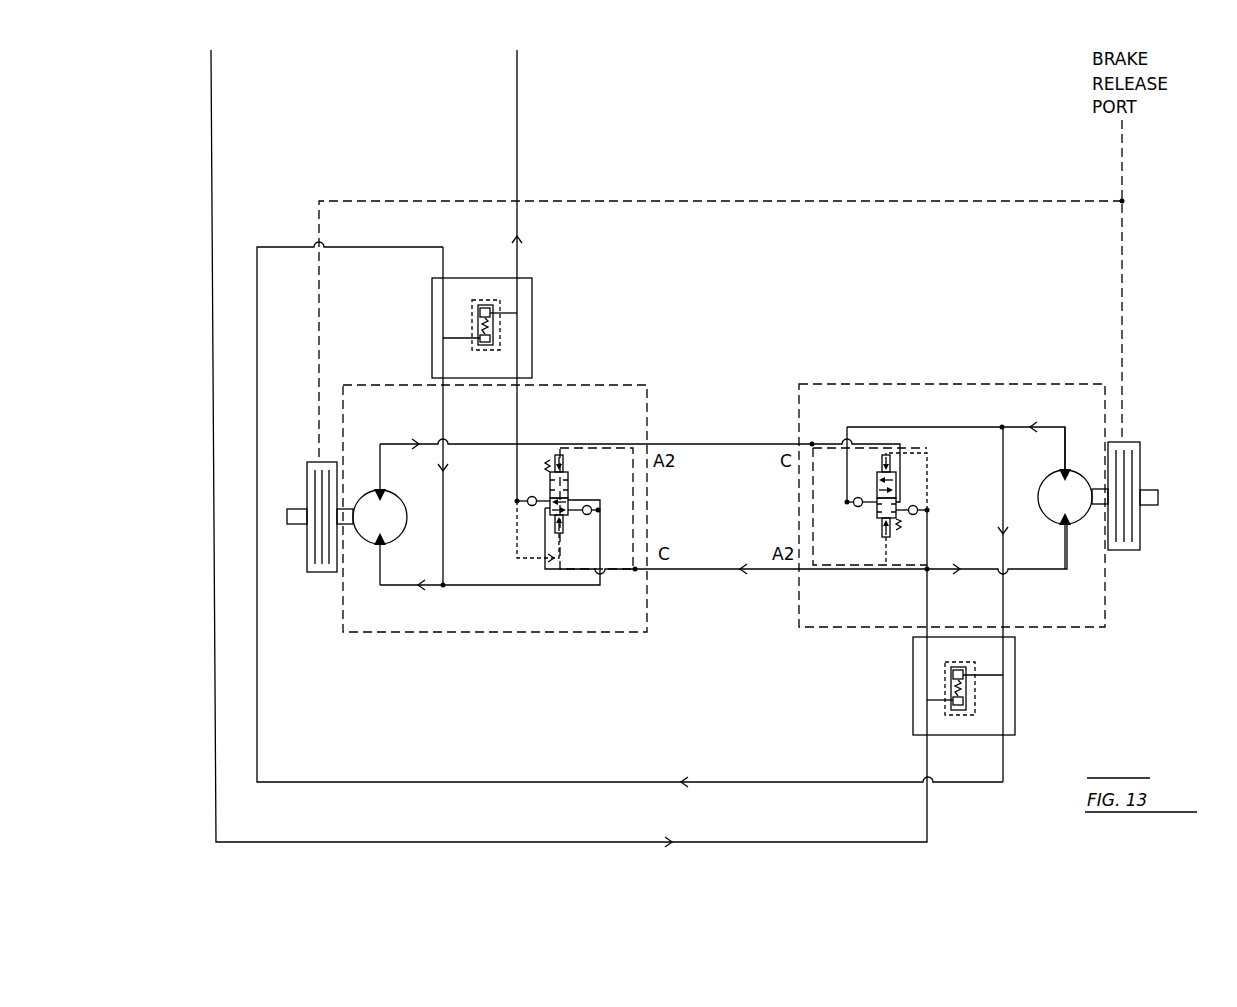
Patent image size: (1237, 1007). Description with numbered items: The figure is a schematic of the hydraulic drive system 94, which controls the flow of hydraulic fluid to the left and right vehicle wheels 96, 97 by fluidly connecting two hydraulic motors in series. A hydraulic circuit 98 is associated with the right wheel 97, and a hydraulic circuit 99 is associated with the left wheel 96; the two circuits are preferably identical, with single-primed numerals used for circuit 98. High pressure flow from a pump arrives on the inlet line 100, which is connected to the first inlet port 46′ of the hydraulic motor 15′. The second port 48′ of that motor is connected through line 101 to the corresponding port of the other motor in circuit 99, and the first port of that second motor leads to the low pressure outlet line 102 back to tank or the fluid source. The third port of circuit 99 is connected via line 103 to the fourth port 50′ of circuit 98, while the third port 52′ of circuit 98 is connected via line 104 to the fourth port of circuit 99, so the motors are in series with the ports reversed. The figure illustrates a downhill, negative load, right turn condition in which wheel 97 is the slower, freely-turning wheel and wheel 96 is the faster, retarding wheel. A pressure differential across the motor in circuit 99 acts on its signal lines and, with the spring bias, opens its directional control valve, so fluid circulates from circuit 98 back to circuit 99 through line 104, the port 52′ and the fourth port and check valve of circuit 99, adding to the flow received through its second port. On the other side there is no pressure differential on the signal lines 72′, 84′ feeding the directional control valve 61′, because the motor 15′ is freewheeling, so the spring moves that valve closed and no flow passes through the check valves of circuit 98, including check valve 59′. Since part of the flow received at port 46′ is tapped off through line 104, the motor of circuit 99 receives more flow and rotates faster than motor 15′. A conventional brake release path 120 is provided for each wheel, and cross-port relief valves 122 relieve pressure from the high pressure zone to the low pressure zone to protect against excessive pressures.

The inlet line 100 is at (211, 92).
The line 101 is at (580, 782).
The low pressure outlet line 102 is at (517, 70).
The line 103 is at (710, 443).
The line 104 is at (714, 569).
The brake release path 120 is at (1122, 165).
The cross-port relief valves 122 is at (533, 292).
The hydraulic drive system 94 is at (728, 293).
The left vehicle wheel 96 is at (323, 574).
The right vehicle wheel 97 is at (1145, 552).
The hydraulic circuit 98 is at (873, 383).
The hydraulic circuit 99 is at (618, 385).
The hydraulic motor 15′ is at (1076, 470).
The A1 port 46′ is at (928, 628).
The B port 48′ is at (1004, 628).
The C port 50′ is at (812, 443).
The A2 port 52′ is at (800, 571).
The check valve 59′ is at (917, 507).
The directional control valve 61′ is at (912, 484).
The signal line 72′ is at (910, 450).
The signal line 84′ is at (820, 565).